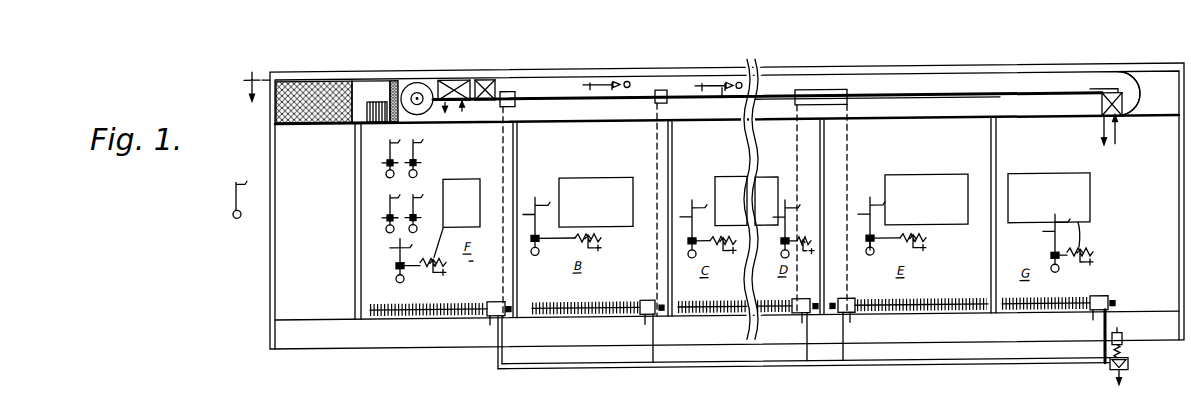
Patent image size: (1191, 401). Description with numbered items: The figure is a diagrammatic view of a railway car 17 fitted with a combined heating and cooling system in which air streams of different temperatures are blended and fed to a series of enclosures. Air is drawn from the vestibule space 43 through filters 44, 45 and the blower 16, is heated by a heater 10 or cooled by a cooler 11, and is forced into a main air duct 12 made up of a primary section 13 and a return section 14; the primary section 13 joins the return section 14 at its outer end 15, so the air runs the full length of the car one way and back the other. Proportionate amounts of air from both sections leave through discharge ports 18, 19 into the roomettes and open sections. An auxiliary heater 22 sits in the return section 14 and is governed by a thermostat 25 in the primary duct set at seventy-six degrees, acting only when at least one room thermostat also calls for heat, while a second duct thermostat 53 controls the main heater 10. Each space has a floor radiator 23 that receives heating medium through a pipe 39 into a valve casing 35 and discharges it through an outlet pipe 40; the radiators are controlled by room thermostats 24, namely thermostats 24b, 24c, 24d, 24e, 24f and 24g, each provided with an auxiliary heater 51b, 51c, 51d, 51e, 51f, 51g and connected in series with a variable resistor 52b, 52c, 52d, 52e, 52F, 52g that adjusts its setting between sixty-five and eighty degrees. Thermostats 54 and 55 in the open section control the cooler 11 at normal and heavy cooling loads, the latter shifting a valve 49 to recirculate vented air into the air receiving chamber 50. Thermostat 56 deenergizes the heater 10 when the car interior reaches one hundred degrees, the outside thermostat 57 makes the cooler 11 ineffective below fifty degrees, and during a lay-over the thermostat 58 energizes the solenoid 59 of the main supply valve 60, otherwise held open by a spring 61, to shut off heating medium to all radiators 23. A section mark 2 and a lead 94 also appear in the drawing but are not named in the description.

The section line 2 is at (245, 86).
The heater 10 is at (488, 82).
The cooler 11 is at (455, 82).
The main air duct 12 is at (552, 80).
The primary section 13 is at (770, 84).
The return section 14 is at (714, 143).
The outer end 15 is at (1122, 85).
The blower 16 is at (414, 84).
The railway car 17 is at (893, 72).
The discharge port 18 is at (667, 96).
The discharge port 19 is at (656, 108).
The auxiliary heater 22 is at (1102, 112).
The floor radiator 23 is at (455, 313).
The room thermostat 24 is at (872, 261).
The thermostat 24b is at (535, 200).
The thermostat 24c is at (692, 204).
The thermostat 24d is at (787, 207).
The thermostat 24e is at (870, 203).
The thermostat 24f is at (400, 283).
The thermostat 24g is at (1051, 264).
The thermostat 25 is at (606, 86).
The valve casing 35 is at (487, 306).
The pipe 39 is at (503, 330).
The outlet pipe 40 is at (489, 325).
The vestibule space 43 is at (294, 222).
The filter 44 is at (308, 125).
The filter 45 is at (393, 88).
The valve 49 is at (370, 122).
The air receiving chamber 50 is at (360, 84).
The auxiliary heater 51b is at (531, 255).
The auxiliary heater 51c is at (705, 254).
The auxiliary heater 51d is at (785, 251).
The auxiliary heater 51e is at (867, 256).
The auxiliary heater 51f is at (425, 263).
The auxiliary heater 51g is at (1075, 253).
The variable resistor 52F is at (461, 203).
The variable resistor 52b is at (590, 240).
The variable resistor 52c is at (731, 200).
The variable resistor 52d is at (791, 204).
The variable resistor 52e is at (914, 240).
The variable resistor 52g is at (1049, 198).
The thermostat 53 is at (726, 92).
The thermostat 54 is at (383, 223).
The thermostat 55 is at (414, 221).
The thermostat 56 is at (389, 177).
The thermostat 57 is at (234, 216).
The thermostat 58 is at (419, 176).
The solenoid 59 is at (1125, 344).
The main supply valve 60 is at (1130, 372).
The spring 61 is at (1105, 366).
The connection 94 is at (722, 102).